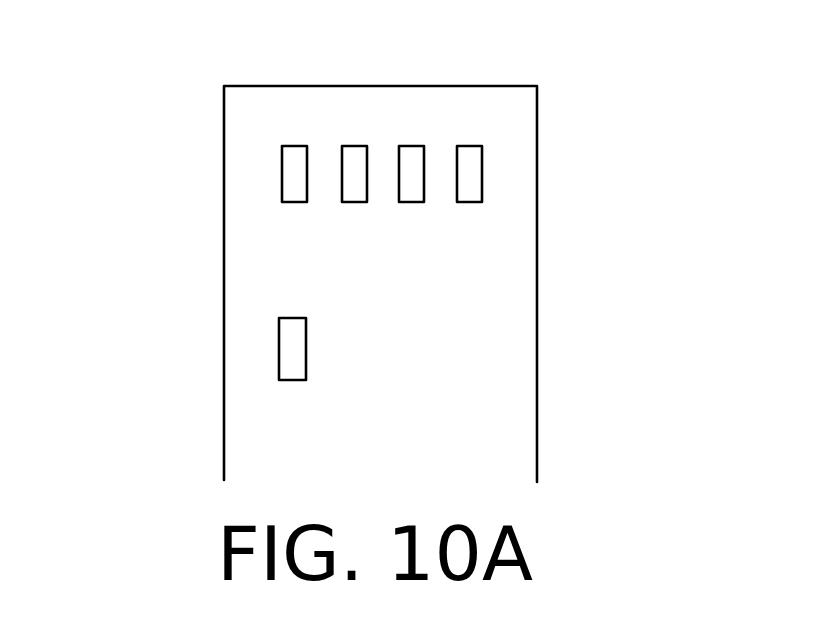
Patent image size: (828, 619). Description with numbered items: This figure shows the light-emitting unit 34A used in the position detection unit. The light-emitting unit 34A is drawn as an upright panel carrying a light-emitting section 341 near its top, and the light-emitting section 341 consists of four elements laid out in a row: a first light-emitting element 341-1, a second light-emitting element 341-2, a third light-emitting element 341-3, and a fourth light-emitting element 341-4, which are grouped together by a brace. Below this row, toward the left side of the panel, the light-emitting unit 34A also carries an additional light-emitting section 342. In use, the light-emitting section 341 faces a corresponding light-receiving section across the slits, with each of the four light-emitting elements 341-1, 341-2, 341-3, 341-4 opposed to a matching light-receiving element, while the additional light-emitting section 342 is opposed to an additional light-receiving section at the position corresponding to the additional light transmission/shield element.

The light-emitting unit 34A is at (224, 396).
The light-emitting section 341 is at (387, 161).
The first light-emitting element 341-1 is at (290, 202).
The second light-emitting element 341-2 is at (353, 202).
The third light-emitting element 341-3 is at (410, 202).
The fourth light-emitting element 341-4 is at (468, 202).
The additional light-emitting section 342 is at (293, 340).